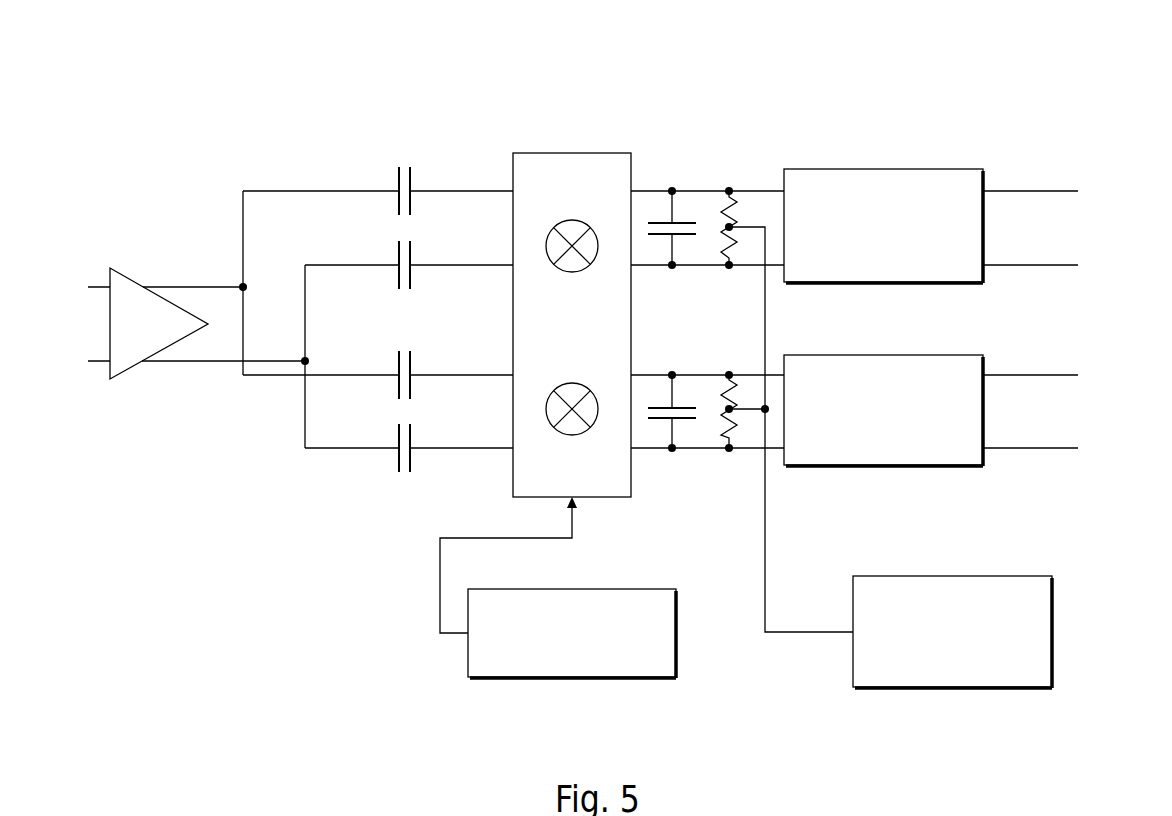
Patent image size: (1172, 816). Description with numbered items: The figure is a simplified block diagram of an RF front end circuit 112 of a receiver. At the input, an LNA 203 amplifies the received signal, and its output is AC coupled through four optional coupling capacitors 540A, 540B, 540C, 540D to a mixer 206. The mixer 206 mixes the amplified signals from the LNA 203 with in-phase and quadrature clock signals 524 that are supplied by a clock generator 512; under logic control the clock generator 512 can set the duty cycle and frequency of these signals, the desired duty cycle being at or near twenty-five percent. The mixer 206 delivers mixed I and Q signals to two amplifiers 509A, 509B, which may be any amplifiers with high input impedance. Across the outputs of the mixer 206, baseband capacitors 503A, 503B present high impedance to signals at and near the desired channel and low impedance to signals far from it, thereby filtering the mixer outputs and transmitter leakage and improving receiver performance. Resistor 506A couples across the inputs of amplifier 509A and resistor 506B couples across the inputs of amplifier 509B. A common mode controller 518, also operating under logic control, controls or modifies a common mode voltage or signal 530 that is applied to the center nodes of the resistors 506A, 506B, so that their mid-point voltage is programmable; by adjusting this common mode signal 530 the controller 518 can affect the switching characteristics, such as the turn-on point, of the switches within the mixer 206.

The RF front end circuit 112 is at (709, 86).
The LNA 203 is at (110, 372).
The mixer 206 is at (558, 153).
The baseband capacitor 503A is at (672, 205).
The baseband capacitor 503B is at (680, 421).
The resistor 506A is at (727, 207).
The resistor 506B is at (725, 383).
The amplifier 509A is at (883, 169).
The amplifier 509B is at (883, 465).
The clock generator 512 is at (677, 612).
The common mode controller 518 is at (883, 576).
The I/Q clock signals 524 is at (440, 618).
The common mode voltage or signal 530 is at (765, 485).
The coupling capacitor 540A is at (412, 178).
The coupling capacitor 540B is at (432, 348).
The coupling capacitor 540C is at (432, 292).
The coupling capacitor 540D is at (412, 463).